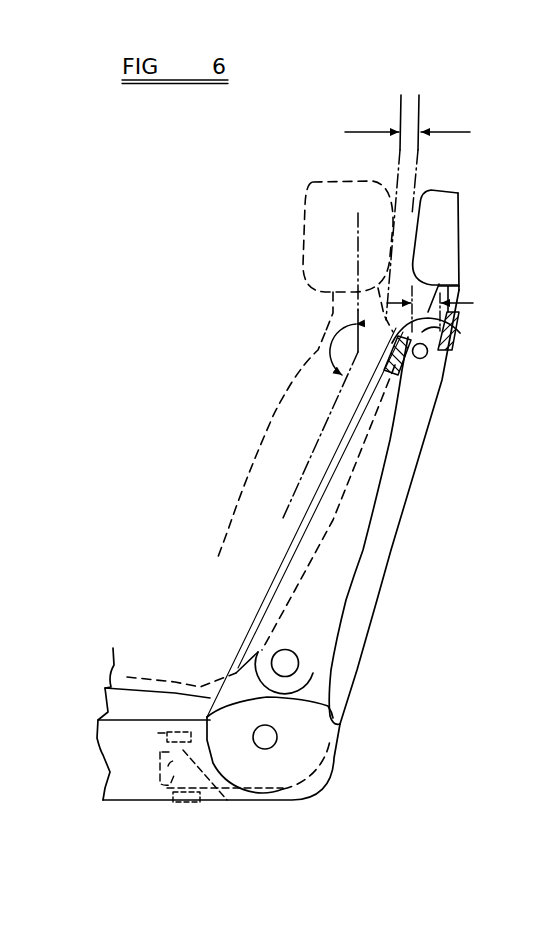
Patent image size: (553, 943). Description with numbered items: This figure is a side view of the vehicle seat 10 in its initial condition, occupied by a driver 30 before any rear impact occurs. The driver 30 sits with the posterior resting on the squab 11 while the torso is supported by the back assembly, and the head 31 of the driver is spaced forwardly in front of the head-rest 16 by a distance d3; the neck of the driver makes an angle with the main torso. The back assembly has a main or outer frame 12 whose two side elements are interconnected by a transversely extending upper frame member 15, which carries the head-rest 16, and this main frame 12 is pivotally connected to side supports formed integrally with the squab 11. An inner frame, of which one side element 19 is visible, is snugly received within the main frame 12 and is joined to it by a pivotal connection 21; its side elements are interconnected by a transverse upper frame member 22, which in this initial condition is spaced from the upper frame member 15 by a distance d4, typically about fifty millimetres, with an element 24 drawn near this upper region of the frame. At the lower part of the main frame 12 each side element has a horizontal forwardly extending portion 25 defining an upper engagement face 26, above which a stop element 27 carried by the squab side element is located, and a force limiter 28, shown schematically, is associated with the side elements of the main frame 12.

The bracket 10 is at (370, 643).
The squab 11 is at (166, 712).
The main frame 12 is at (385, 532).
The upper frame member 15 is at (450, 350).
The head-rest 16 is at (450, 248).
The side element of inner frame 19 is at (330, 583).
The pivotal connection 21 is at (313, 673).
The upper frame member of inner frame 22 is at (428, 360).
The stop pad 24 is at (460, 332).
The forwardly extending portion 25 is at (160, 787).
The engagement face 26 is at (227, 800).
The stop element 27 is at (158, 734).
The force limiter 28 is at (203, 803).
The driver 30 is at (265, 477).
The head 31 is at (330, 193).
The distance d3 is at (410, 102).
The distance d4 is at (433, 288).